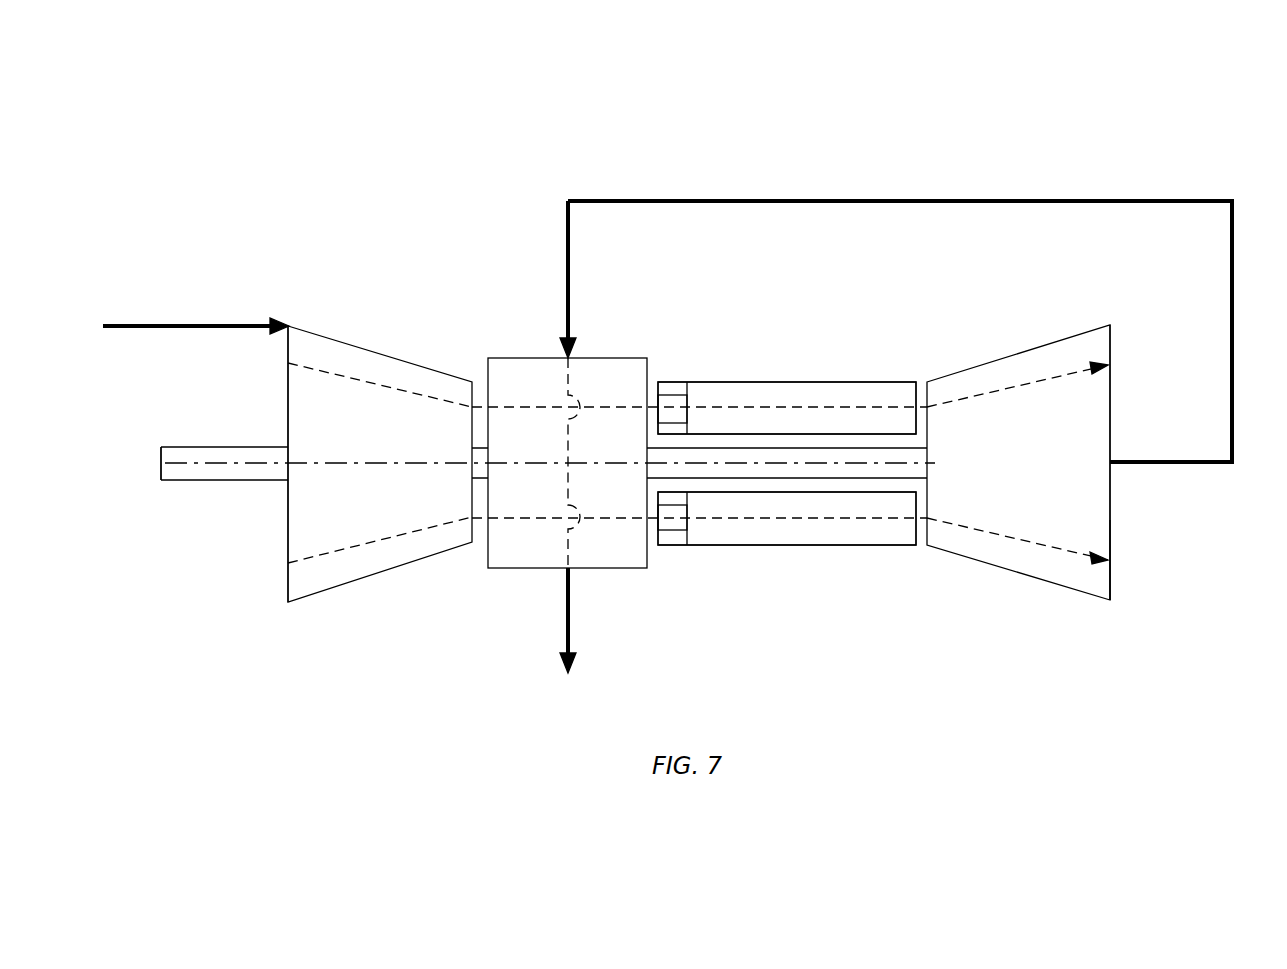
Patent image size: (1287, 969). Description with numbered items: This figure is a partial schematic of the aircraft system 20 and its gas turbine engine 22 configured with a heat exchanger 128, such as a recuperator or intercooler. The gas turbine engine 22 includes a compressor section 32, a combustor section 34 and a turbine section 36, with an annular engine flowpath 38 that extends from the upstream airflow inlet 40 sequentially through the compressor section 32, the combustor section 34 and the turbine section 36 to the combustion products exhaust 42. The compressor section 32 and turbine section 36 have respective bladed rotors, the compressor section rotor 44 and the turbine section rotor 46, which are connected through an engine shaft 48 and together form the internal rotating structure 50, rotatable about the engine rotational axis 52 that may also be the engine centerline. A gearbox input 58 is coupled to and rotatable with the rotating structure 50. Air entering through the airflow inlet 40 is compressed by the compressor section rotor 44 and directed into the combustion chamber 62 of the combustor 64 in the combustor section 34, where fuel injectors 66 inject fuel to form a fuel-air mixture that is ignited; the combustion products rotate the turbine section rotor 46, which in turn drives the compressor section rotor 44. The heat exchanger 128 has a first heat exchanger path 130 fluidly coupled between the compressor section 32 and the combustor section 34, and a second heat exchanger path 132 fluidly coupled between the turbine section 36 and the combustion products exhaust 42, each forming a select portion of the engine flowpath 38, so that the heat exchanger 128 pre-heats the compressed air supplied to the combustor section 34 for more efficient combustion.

The system 20 is at (218, 105).
The gas turbine engine 22 is at (284, 250).
The compressor section 32 is at (378, 322).
The combustor section 34 is at (783, 333).
The turbine section 36 is at (1000, 326).
The engine flowpath 38 is at (347, 378).
The airflow inlet 40 is at (105, 325).
The combustion products exhaust 42 is at (568, 675).
The compressor section rotor 44 is at (288, 520).
The turbine section rotor 46 is at (1112, 526).
The engine shaft 48 is at (907, 448).
The rotating structure 50 is at (1137, 425).
The engine rotational axis 52 is at (185, 468).
The gearbox input 58 is at (233, 447).
The combustion chamber 62 is at (872, 397).
The combustor 64 is at (825, 360).
The fuel injectors 66 is at (687, 408).
The heat exchanger 128 is at (503, 585).
The first heat exchanger path 130 is at (617, 407).
The second heat exchanger path 132 is at (567, 497).